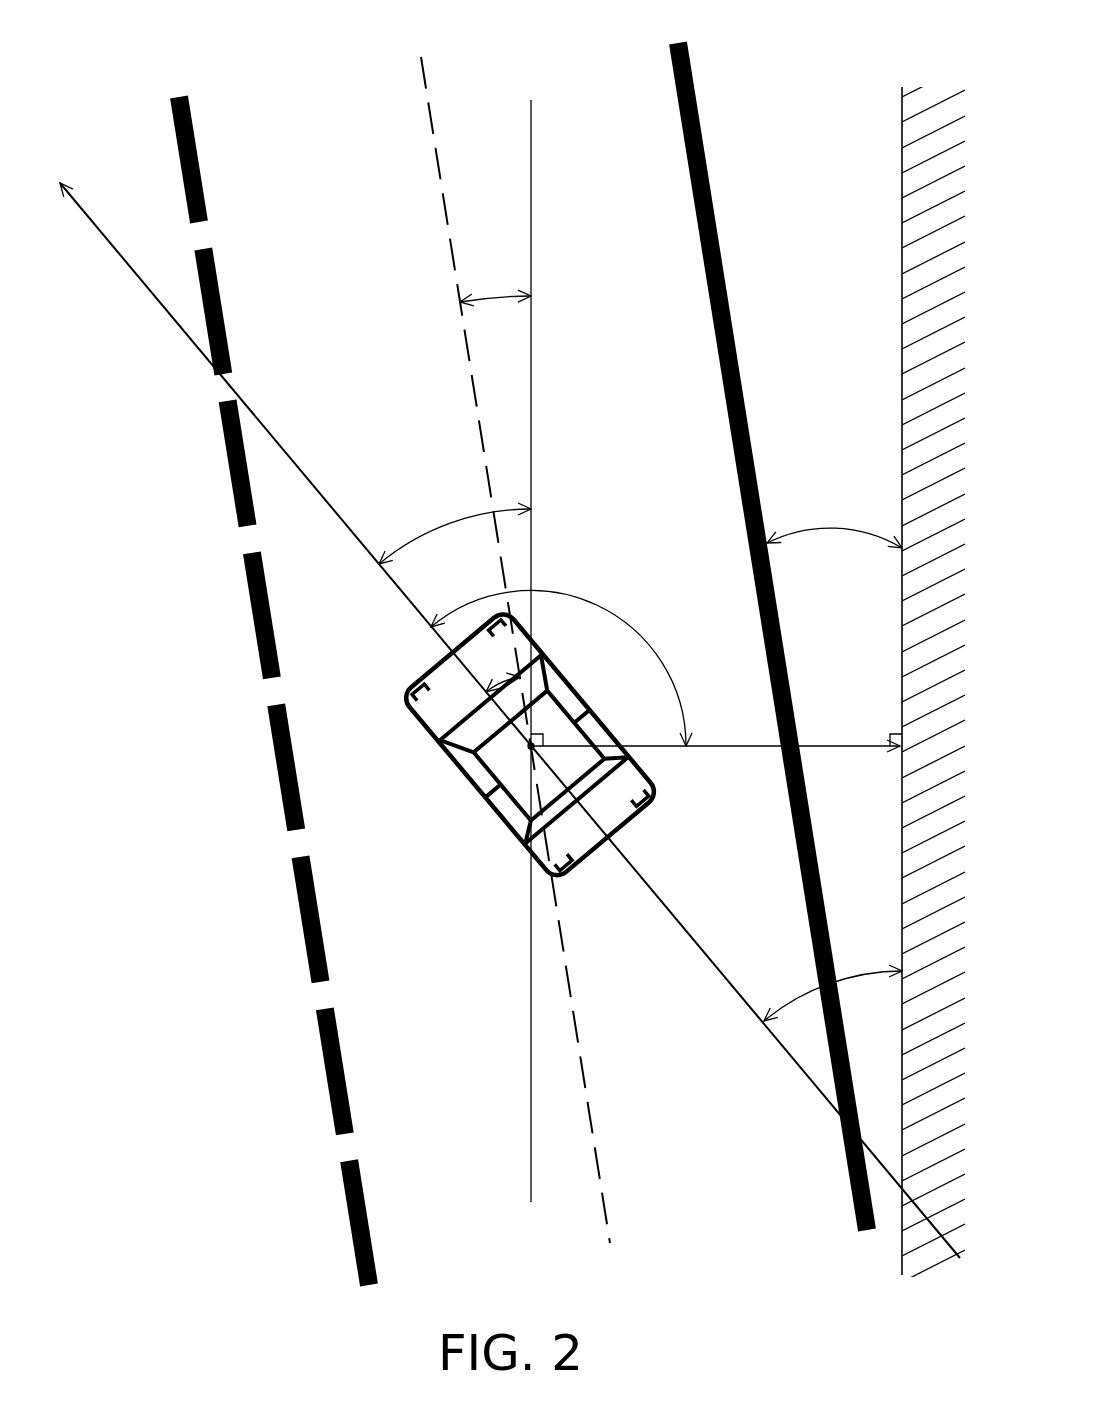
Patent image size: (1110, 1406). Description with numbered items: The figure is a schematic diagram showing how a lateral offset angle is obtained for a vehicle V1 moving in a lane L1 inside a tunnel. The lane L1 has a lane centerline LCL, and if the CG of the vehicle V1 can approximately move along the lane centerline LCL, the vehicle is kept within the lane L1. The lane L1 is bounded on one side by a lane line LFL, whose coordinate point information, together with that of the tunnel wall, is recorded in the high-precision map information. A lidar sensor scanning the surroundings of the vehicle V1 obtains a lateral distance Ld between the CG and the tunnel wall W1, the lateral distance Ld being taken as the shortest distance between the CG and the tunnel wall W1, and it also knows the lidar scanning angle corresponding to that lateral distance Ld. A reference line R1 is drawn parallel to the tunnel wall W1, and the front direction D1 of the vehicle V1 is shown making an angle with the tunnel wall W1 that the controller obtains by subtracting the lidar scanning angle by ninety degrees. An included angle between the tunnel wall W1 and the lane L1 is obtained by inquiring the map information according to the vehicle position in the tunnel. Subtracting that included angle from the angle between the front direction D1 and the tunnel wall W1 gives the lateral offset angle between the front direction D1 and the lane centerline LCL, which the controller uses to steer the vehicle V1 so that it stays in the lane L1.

The lane L1 is at (357, 104).
The lane centerline LCL is at (430, 113).
The reference line R1 is at (532, 158).
The tunnel wall W1 is at (902, 130).
The front direction D1 is at (176, 322).
The lane line LFL is at (852, 1198).
The vehicle V1 is at (424, 736).
The element CG is at (527, 749).
The lateral distance Ld is at (716, 728).